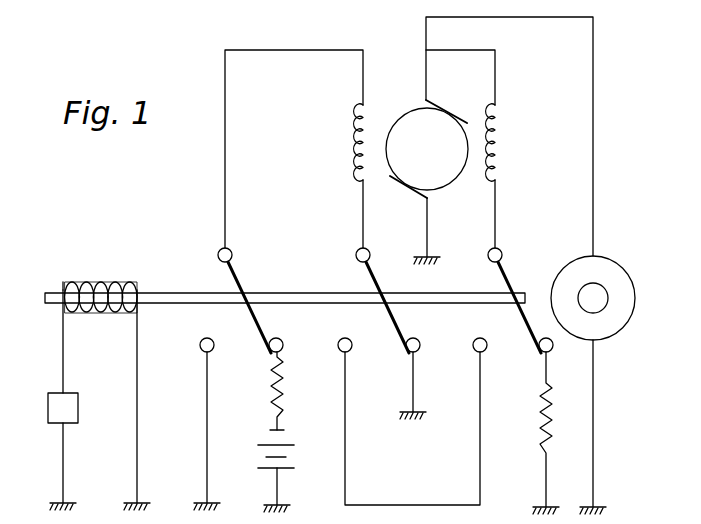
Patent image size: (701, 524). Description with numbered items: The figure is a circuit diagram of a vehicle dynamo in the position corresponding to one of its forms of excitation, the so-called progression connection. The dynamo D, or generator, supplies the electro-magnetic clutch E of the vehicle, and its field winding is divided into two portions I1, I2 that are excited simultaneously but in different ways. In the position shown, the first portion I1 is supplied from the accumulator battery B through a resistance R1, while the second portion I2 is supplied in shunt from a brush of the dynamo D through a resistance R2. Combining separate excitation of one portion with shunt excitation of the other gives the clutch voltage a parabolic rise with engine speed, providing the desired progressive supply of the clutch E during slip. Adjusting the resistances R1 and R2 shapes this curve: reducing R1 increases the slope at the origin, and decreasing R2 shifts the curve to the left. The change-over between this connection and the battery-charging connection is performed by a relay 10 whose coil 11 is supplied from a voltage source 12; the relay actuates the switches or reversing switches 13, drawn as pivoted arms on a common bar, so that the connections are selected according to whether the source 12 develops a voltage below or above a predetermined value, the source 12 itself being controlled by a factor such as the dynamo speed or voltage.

The relay 10 is at (178, 298).
The coil 11 is at (104, 282).
The voltage source 12 is at (60, 408).
The switches or reversing switches 13 is at (243, 288).
The first field winding portion I1 is at (356, 150).
The second field winding portion I2 is at (502, 148).
The dynamo D is at (436, 161).
The electro-magnetic clutch E is at (606, 262).
The first resistance R1 is at (271, 385).
The second resistance R2 is at (548, 419).
The accumulator battery B is at (256, 464).